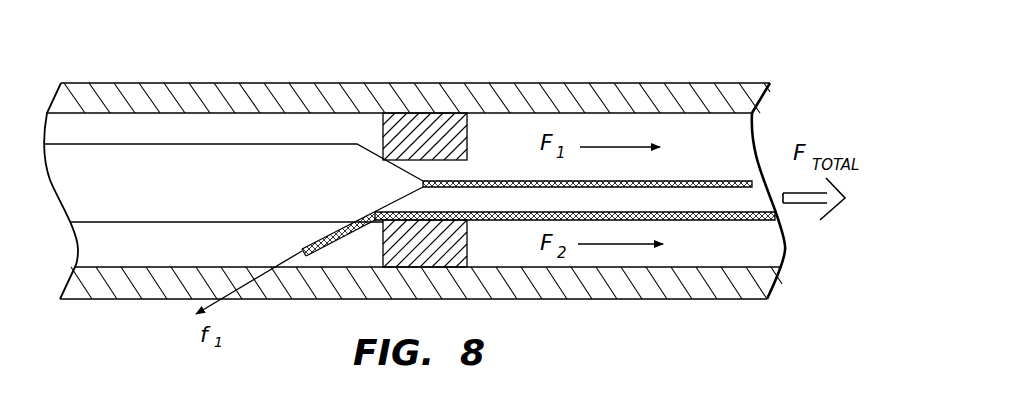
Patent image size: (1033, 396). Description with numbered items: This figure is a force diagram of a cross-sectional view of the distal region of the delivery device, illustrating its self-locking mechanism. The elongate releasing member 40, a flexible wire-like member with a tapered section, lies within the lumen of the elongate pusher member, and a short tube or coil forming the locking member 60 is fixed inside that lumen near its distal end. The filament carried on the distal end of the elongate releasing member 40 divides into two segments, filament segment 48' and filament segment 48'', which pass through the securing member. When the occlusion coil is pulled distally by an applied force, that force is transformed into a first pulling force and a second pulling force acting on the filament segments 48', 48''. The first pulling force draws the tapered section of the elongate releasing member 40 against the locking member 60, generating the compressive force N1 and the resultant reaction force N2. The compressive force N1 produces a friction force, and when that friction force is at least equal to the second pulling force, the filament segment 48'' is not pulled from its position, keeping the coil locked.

The elongate releasing member 40 is at (249, 150).
The locking member 60 is at (470, 114).
The filament segment 48' is at (587, 109).
The filament segment 48'' is at (575, 284).
The compressive force N1 is at (370, 208).
The resultant reaction force N2 is at (425, 243).